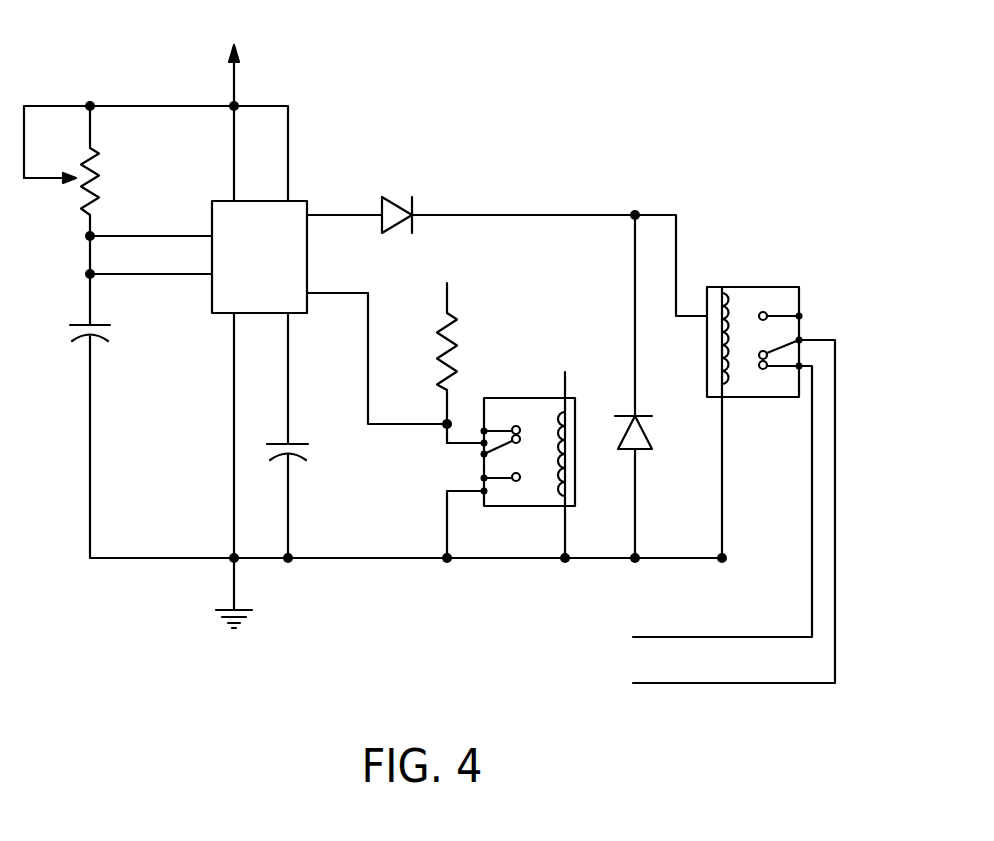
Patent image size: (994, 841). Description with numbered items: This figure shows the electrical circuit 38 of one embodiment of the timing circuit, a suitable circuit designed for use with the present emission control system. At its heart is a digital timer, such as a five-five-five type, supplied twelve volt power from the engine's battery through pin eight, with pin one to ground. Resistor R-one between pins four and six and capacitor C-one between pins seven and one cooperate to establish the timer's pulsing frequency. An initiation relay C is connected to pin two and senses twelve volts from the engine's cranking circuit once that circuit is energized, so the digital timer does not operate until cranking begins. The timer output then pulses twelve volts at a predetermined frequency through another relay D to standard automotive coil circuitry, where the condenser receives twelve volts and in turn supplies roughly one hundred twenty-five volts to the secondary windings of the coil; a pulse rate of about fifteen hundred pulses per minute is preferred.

The timer circuit 38 is at (429, 357).
The initiation relay C is at (575, 473).
The relay D is at (782, 287).